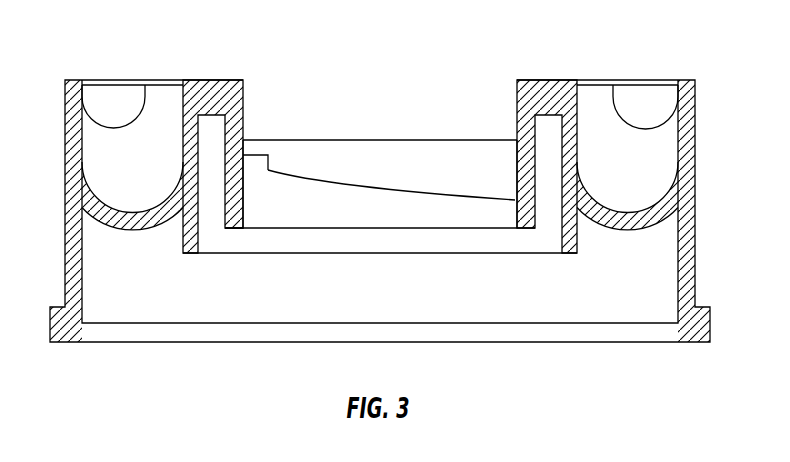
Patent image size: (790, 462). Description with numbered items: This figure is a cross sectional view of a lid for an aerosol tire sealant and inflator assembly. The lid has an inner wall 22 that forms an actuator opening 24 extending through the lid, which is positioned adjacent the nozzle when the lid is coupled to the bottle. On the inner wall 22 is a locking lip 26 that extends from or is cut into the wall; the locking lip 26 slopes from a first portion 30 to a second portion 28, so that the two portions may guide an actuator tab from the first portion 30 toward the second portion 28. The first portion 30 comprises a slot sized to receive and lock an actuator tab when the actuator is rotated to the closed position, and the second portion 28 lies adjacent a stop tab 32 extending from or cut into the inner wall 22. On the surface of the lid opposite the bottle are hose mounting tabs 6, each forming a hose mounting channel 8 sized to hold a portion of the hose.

The hose mounting tab 6 is at (162, 83).
The hose mounting channel 8 is at (112, 127).
The inner wall 22 is at (453, 157).
The actuator opening 24 is at (400, 169).
The locking lip 26 is at (363, 187).
The second portion 28 is at (512, 206).
The first portion 30 is at (256, 153).
The stop tab 32 is at (233, 230).